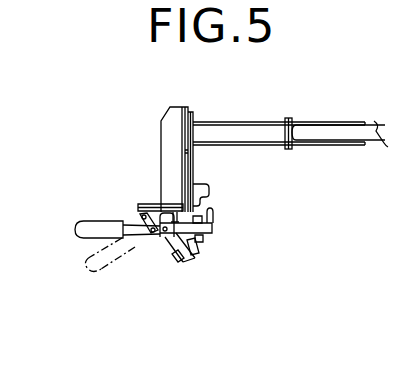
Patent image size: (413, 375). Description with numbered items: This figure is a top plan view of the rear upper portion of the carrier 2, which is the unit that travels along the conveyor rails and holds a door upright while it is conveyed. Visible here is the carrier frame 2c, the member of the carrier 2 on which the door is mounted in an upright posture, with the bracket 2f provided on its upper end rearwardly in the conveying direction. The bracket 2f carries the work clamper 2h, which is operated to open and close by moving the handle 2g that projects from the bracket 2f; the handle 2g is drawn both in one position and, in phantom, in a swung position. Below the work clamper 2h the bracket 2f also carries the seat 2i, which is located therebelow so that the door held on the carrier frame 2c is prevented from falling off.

The carrier 2 is at (160, 113).
The carrier frame 2c is at (370, 130).
The bracket 2f is at (155, 210).
The handle 2g is at (100, 222).
The work clamper 2h is at (213, 217).
The seat 2i is at (211, 197).